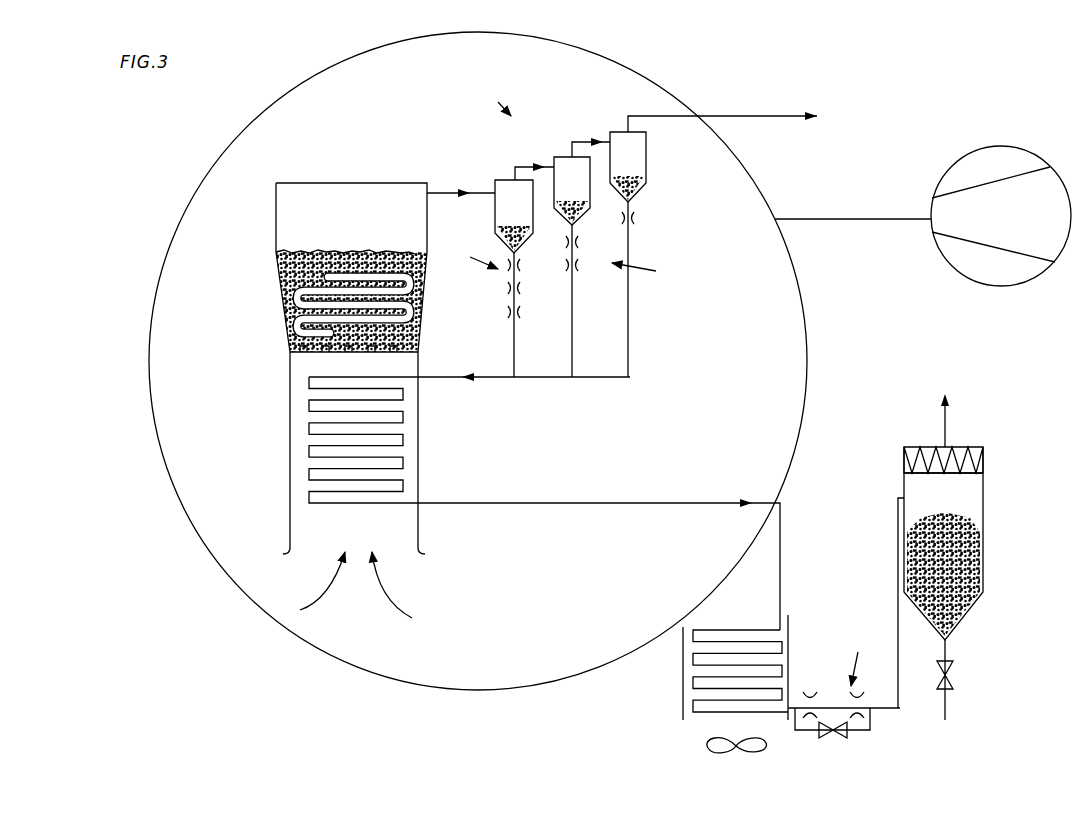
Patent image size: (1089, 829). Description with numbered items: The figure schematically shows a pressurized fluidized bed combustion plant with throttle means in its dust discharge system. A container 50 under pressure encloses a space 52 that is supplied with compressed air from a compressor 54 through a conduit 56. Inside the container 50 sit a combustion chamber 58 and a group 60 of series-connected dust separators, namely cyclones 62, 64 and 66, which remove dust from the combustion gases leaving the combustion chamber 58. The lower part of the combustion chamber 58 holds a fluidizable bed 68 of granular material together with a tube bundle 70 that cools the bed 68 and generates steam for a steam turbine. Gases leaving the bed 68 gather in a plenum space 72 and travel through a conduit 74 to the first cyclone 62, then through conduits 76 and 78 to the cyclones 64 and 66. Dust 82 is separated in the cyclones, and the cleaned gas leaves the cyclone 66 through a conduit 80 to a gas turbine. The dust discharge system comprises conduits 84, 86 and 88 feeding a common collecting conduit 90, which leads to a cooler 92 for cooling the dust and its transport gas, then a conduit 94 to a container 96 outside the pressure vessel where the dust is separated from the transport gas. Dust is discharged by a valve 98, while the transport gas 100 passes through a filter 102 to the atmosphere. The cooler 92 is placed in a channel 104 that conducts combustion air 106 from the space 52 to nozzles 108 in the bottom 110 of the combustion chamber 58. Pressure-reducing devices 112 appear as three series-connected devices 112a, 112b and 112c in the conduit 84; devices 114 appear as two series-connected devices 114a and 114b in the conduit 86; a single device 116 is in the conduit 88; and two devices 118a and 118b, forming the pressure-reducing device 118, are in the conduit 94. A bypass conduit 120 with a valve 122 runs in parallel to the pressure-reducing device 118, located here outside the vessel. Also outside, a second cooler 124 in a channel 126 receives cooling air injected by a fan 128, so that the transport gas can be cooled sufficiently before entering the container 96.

The container 50 is at (150, 445).
The space 52 is at (437, 648).
The compressor 54 is at (1002, 140).
The conduit 56 is at (856, 222).
The combustion chamber 58 is at (276, 212).
The group of series-connected dust separators 60 is at (498, 101).
The first cyclone 62 is at (505, 178).
The cyclone 64 is at (562, 152).
The cyclone 66 is at (621, 128).
The fluidizable bed 68 is at (423, 297).
The tube bundle 70 is at (290, 290).
The plenum space 72 is at (356, 210).
The conduit 74 is at (468, 188).
The conduit 76 is at (527, 162).
The conduit 78 is at (590, 136).
The conduit 80 is at (740, 112).
The dust 82 is at (525, 235).
The conduit 84 is at (518, 360).
The conduit 86 is at (576, 360).
The conduit 88 is at (631, 354).
The common collecting conduit 90 is at (482, 388).
The cooler 92 is at (312, 458).
The conduit 94 is at (658, 496).
The container 96 is at (975, 510).
The valve 98 is at (955, 673).
The transport gas 100 is at (948, 418).
The filter 102 is at (985, 465).
The channel 104 is at (305, 414).
The combustion air 106 is at (377, 590).
The nozzles 108 is at (292, 353).
The bottom 110 is at (400, 352).
The pressure-reducing devices 112 is at (478, 278).
The pressure-reducing device 112a is at (523, 268).
The pressure-reducing device 112b is at (523, 290).
The pressure-reducing device 112c is at (523, 314).
The pressure-reducing devices 114 is at (628, 259).
The pressure-reducing device 114a is at (581, 241).
The pressure-reducing device 114b is at (581, 267).
The pressure-reducing device 116 is at (638, 220).
The pressure-reducing device 118 is at (844, 667).
The pressure-reducing device 118a is at (812, 695).
The pressure-reducing device 118b is at (862, 695).
The bypass conduit 120 is at (868, 732).
The valve 122 is at (830, 740).
The second cooler 124 is at (735, 625).
The channel 126 is at (765, 658).
The fan 128 is at (760, 752).